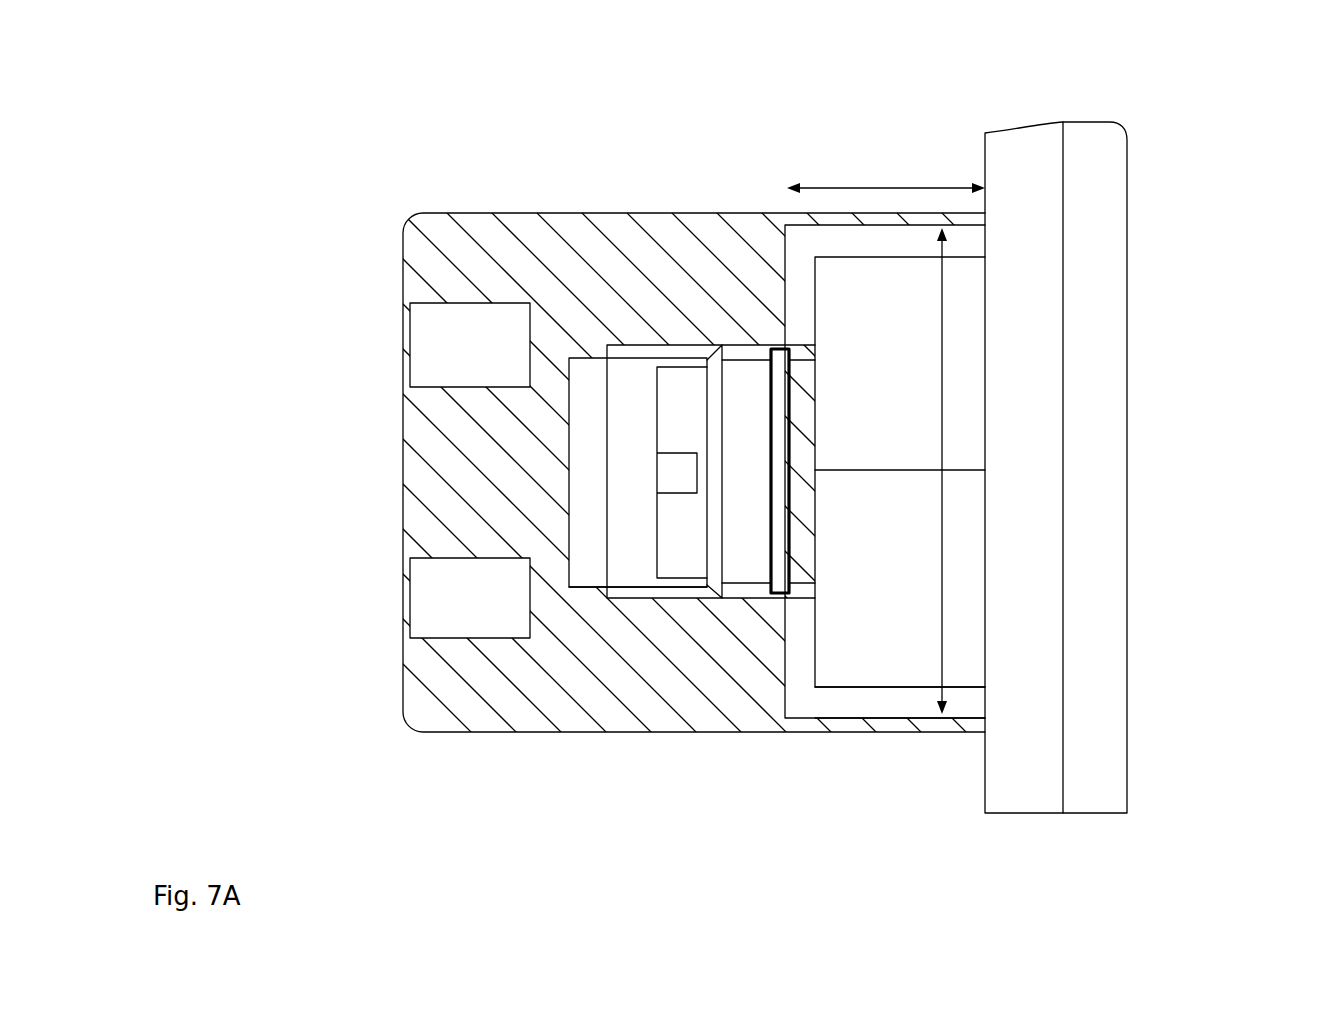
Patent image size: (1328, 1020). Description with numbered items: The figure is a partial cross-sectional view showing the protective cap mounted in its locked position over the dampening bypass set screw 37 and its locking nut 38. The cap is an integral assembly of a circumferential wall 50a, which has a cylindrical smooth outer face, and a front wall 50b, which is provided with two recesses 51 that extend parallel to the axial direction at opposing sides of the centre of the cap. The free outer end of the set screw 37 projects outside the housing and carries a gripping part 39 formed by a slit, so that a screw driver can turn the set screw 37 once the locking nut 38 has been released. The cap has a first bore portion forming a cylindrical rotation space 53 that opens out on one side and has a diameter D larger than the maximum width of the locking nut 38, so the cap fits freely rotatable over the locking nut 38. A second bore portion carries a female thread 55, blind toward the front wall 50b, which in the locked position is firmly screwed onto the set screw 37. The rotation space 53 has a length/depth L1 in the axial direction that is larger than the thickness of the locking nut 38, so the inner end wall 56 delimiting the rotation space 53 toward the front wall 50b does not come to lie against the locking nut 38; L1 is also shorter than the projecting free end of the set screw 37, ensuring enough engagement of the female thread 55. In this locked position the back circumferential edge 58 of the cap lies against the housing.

The circumferential wall 50a is at (660, 206).
The front wall 50b is at (398, 492).
The recess 51 is at (443, 362).
The dampening bypass set screw 37 is at (737, 538).
The gripping part 39 is at (690, 477).
The female thread 55 is at (625, 590).
The inner end wall 56 is at (785, 297).
The locking nut 38 is at (853, 627).
The rotation space 53 is at (893, 703).
The back circumferential edge 58 is at (985, 218).
The diameter D is at (945, 390).
The length/depth L1 is at (848, 188).